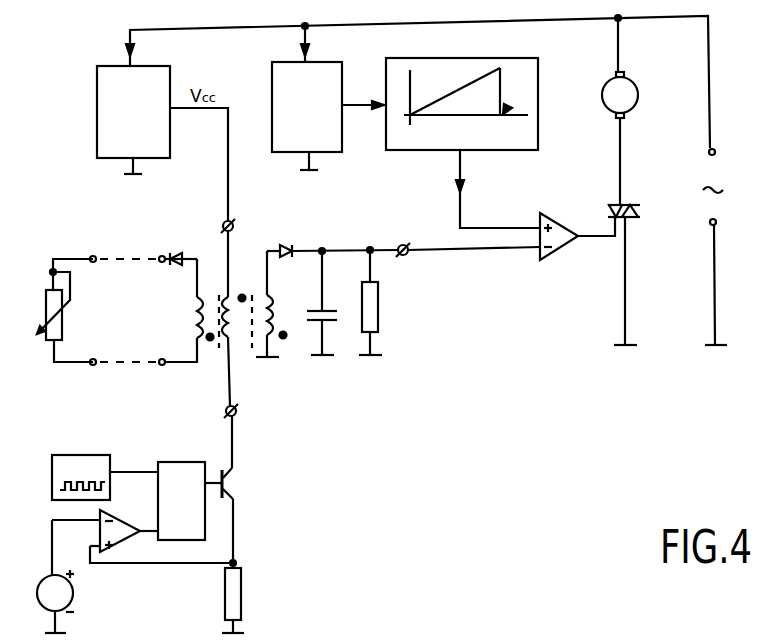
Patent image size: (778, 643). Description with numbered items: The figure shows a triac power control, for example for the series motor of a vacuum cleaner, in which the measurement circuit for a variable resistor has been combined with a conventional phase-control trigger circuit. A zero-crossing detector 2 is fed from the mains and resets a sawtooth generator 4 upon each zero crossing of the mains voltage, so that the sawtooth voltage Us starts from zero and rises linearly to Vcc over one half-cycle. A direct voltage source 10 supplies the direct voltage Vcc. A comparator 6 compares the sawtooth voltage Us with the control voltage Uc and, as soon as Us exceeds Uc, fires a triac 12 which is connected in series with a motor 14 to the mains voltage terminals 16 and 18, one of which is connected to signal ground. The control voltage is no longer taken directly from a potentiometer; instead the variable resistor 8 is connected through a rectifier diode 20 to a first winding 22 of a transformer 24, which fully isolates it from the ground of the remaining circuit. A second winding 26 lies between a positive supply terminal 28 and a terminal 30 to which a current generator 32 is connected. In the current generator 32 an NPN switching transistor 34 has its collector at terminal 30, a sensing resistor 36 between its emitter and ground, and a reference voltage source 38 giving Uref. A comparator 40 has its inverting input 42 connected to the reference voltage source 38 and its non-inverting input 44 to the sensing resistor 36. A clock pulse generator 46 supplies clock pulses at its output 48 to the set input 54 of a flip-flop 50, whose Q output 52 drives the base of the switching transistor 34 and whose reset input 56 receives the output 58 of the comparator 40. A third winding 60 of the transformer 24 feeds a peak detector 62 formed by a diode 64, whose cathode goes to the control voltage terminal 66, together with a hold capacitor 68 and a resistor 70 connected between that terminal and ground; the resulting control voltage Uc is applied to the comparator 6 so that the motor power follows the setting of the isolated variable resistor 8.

The zero-crossing detector 2 is at (328, 80).
The sawtooth generator 4 is at (538, 62).
The comparator 6 is at (560, 246).
The variable resistor 8 is at (58, 330).
The direct voltage source 10 is at (158, 80).
The triac 12 is at (630, 204).
The motor 14 is at (630, 92).
The mains voltage terminal 16 is at (715, 150).
The mains voltage terminal 18 is at (716, 221).
The rectifier diode 20 is at (176, 265).
The first winding 22 is at (196, 318).
The transformer 24 is at (216, 352).
The second winding 26 is at (234, 338).
The positive supply terminal 28 is at (233, 222).
The terminal 30 is at (236, 413).
The current generator 32 is at (196, 620).
The NPN switching transistor 34 is at (238, 487).
The sensing resistor 36 is at (242, 596).
The reference voltage source 38 is at (42, 605).
The comparator 40 is at (118, 534).
The inverting input 42 is at (60, 518).
The non-inverting input 44 is at (94, 546).
The clock pulse generator 46 is at (72, 460).
The output 48 is at (120, 471).
The flip-flop 50 is at (181, 463).
The Q output 52 is at (208, 472).
The set input 54 is at (157, 473).
The reset input 56 is at (146, 564).
The output 58 is at (148, 524).
The third winding 60 is at (277, 315).
The peak detector 62 is at (358, 280).
The diode 64 is at (284, 246).
The control voltage terminal 66 is at (405, 255).
The hold capacitor 68 is at (328, 322).
The resistor 70 is at (372, 312).